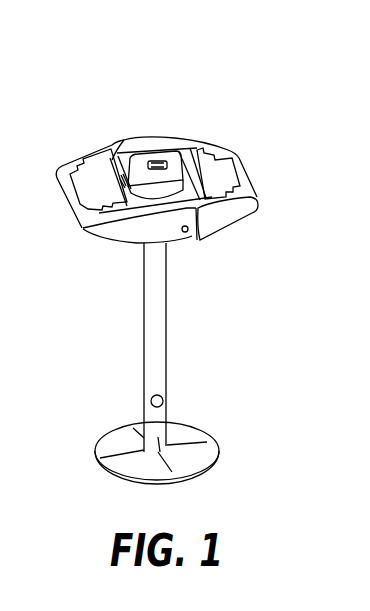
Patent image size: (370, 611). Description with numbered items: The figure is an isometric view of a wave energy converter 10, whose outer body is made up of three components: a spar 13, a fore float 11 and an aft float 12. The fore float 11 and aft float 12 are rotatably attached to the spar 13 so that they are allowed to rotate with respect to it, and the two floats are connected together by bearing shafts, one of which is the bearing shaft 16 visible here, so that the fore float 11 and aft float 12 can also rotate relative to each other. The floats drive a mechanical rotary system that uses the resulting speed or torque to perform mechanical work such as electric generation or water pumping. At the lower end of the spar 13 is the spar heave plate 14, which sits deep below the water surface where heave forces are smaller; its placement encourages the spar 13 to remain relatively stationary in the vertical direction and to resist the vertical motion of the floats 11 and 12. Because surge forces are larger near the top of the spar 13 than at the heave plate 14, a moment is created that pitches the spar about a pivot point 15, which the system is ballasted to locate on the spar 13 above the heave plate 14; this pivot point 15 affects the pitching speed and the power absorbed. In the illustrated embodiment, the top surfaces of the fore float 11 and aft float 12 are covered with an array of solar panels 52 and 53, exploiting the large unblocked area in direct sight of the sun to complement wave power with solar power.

The wave energy converter 10 is at (160, 118).
The fore float 11 is at (80, 227).
The aft float 12 is at (251, 206).
The spar 13 is at (162, 295).
The spar heave plate 14 is at (120, 467).
The pivot point 15 is at (163, 398).
The bearing shaft 16 is at (188, 232).
The solar panel 52 is at (227, 180).
The solar panel 53 is at (95, 177).